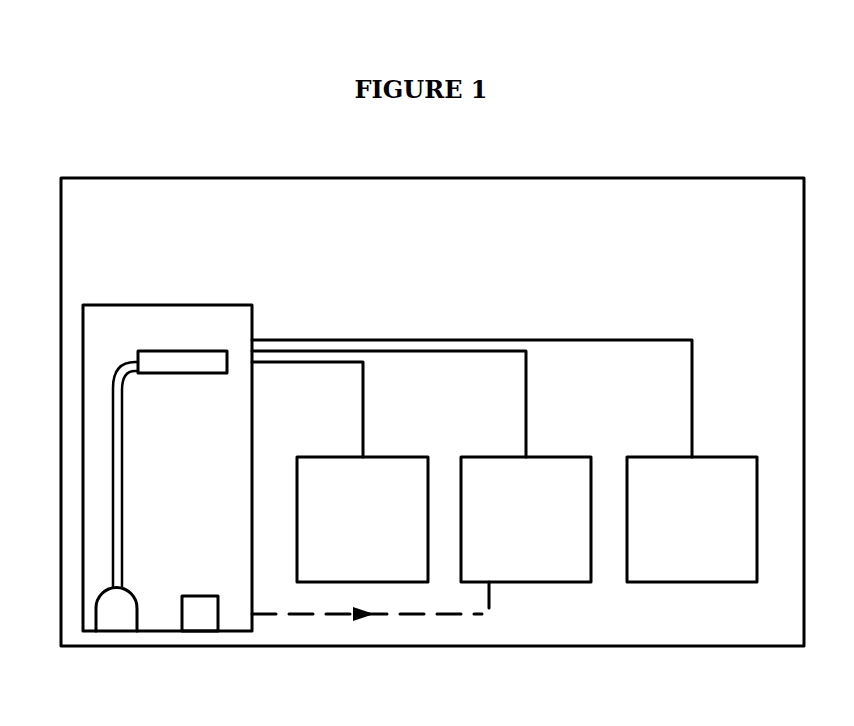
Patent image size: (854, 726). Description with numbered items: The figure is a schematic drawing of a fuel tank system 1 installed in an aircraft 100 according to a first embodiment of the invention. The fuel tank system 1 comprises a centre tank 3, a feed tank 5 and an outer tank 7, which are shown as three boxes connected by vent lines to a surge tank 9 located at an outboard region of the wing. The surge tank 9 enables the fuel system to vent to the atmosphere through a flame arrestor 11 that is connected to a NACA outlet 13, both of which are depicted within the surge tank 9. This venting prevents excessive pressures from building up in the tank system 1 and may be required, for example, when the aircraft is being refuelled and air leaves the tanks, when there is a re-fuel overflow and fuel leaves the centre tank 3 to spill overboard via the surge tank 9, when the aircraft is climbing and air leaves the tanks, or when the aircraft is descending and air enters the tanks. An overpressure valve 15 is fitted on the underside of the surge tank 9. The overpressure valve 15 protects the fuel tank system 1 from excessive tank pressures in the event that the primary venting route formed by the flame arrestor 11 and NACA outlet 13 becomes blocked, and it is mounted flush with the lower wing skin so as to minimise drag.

The aircraft 100 is at (345, 178).
The fuel tank system 1 is at (160, 273).
The surge tank 9 is at (224, 484).
The flame arrestor 11 is at (170, 351).
The NACA outlet 13 is at (122, 633).
The overpressure valve 15 is at (210, 633).
The outer tank 7 is at (415, 454).
The feed tank 5 is at (580, 583).
The centre tank 3 is at (713, 584).